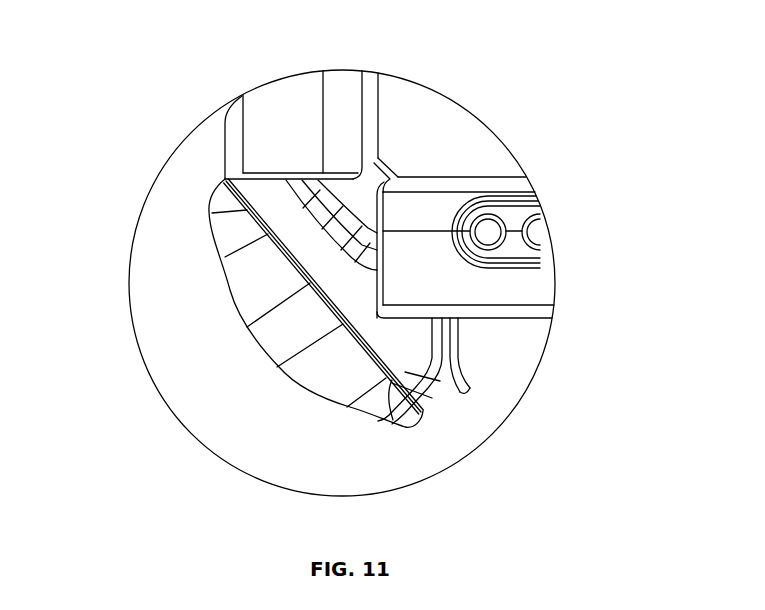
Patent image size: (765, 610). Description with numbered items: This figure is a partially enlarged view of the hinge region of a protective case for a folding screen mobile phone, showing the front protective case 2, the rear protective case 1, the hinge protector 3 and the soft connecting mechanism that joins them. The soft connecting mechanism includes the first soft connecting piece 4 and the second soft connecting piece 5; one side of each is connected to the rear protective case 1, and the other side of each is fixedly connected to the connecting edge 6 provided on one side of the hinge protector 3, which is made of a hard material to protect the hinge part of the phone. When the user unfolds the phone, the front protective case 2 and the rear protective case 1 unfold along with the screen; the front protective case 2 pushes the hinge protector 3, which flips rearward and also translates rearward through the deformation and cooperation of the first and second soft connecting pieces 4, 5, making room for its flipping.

The rear protective case 1 is at (522, 288).
The front protective case 2 is at (297, 140).
The hinge protector 3 is at (267, 293).
The first soft connecting piece 4 is at (418, 375).
The second soft connecting piece 5 is at (495, 413).
The connecting edge 6 is at (487, 380).